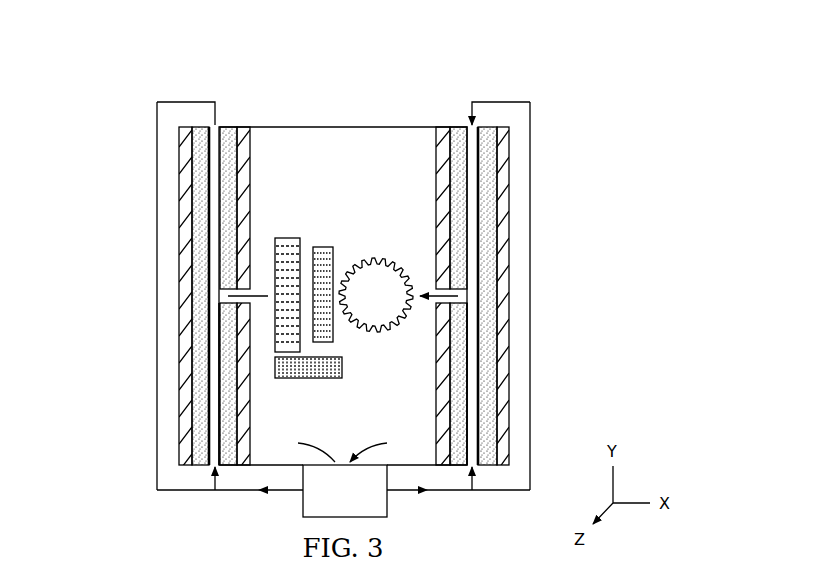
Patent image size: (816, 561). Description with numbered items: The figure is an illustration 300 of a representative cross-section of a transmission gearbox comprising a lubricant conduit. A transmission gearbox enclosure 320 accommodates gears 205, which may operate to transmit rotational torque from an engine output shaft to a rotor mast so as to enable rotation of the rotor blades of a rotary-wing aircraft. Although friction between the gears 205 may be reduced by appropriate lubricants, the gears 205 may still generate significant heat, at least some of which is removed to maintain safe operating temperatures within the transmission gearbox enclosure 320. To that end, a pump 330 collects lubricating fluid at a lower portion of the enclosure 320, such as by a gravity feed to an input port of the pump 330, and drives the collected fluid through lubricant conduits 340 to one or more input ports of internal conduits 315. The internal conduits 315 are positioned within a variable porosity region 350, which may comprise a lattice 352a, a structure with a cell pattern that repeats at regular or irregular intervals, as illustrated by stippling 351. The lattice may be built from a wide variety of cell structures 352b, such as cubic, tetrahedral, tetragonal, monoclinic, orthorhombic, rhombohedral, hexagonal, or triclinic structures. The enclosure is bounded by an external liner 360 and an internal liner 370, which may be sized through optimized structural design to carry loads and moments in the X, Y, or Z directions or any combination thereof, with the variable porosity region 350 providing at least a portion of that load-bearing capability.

The illustration 300 is at (133, 93).
The transmission gearbox enclosure 320 is at (382, 126).
The pump 330 is at (387, 505).
The lubricant conduits 340 is at (157, 183).
The internal conduits 315 is at (213, 235).
The variable porosity region 350 is at (195, 395).
The stippling 351 is at (198, 360).
The lattice 352a is at (460, 337).
The cell structures 352b is at (444, 384).
The external liner 360 is at (187, 431).
The internal liner 370 is at (247, 417).
The gears 205 is at (410, 221).